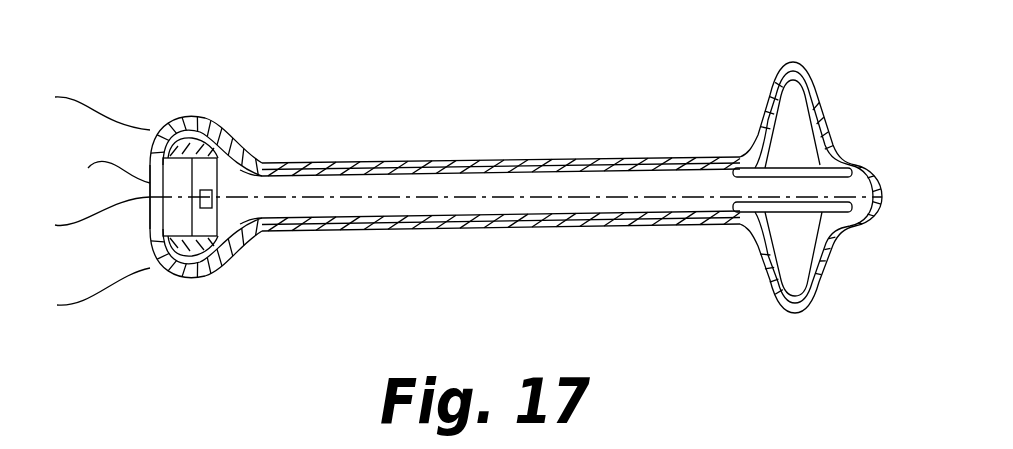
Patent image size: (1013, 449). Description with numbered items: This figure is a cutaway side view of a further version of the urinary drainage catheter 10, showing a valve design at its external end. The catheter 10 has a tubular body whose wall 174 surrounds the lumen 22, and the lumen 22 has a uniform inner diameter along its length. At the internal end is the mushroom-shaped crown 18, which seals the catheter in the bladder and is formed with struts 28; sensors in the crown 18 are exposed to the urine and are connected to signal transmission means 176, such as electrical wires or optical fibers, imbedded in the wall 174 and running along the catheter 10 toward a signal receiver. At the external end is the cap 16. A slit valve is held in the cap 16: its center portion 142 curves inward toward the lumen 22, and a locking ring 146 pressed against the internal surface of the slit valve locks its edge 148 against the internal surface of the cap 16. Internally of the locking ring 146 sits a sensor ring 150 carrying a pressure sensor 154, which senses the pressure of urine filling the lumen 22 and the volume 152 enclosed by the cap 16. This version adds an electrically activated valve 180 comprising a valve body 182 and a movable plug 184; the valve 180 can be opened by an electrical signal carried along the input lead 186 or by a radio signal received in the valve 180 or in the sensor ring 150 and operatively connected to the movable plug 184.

The drainage catheter 10 is at (393, 160).
The cap 16 is at (222, 258).
The crown 18 is at (815, 73).
The lumen 22 is at (467, 192).
The struts 28 is at (828, 125).
The center portion 142 is at (146, 185).
The locking ring 146 is at (207, 143).
The edge 148 is at (182, 130).
The sensor ring 150 is at (232, 235).
The volume 152 is at (197, 272).
The pressure sensor 154 is at (242, 173).
The wall 174 is at (533, 163).
The signal transmission means 176 is at (584, 169).
The electrically activated valve 180 is at (158, 128).
The valve body 182 is at (167, 223).
The movable plug 184 is at (213, 193).
The input lead 186 is at (92, 163).